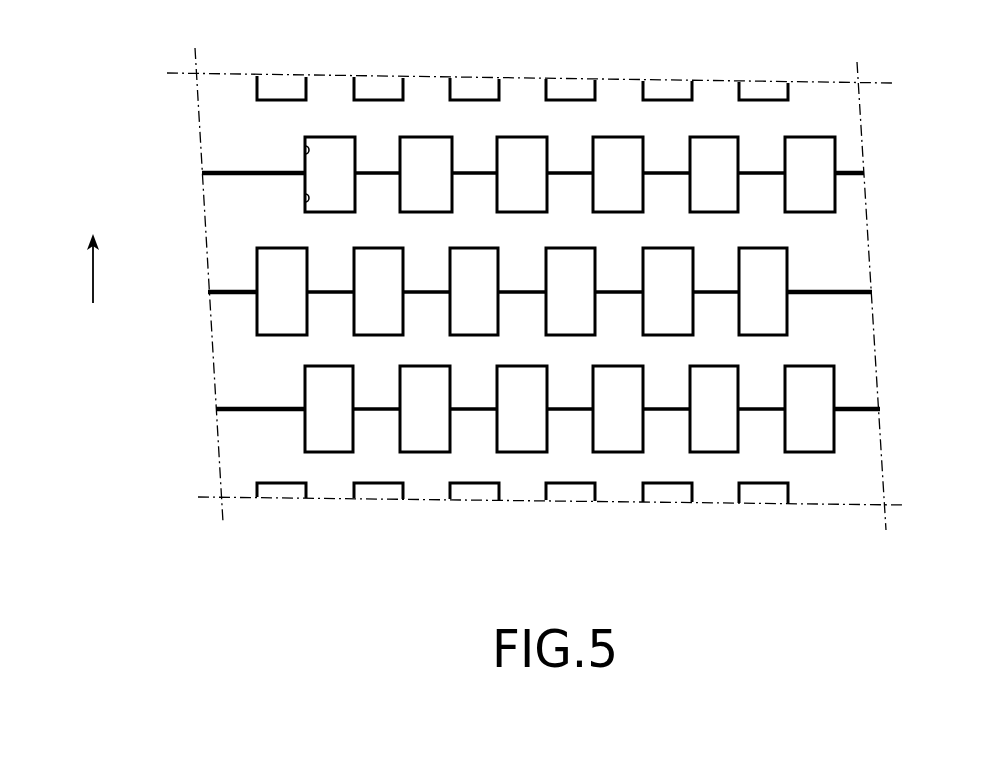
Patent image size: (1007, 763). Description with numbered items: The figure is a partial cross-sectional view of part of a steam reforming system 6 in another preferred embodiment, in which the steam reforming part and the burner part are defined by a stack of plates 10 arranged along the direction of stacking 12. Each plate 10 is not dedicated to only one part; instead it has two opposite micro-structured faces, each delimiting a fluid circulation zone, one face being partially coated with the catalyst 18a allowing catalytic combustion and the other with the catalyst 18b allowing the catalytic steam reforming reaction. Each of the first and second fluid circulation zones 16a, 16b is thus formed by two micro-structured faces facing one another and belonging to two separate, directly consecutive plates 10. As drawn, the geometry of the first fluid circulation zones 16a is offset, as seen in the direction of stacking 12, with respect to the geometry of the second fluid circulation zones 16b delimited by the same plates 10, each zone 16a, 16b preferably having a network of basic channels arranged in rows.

The steam reforming system 6 is at (121, 80).
The plate 10 is at (851, 118).
The direction of stacking 12 is at (78, 268).
The first fluid circulation zone 16a is at (424, 157).
The second fluid circulation zone 16b is at (373, 267).
The catalyst allowing the catalytic combustion 18a is at (305, 203).
The catalyst allowing the catalytic steam reforming reaction 18b is at (450, 270).